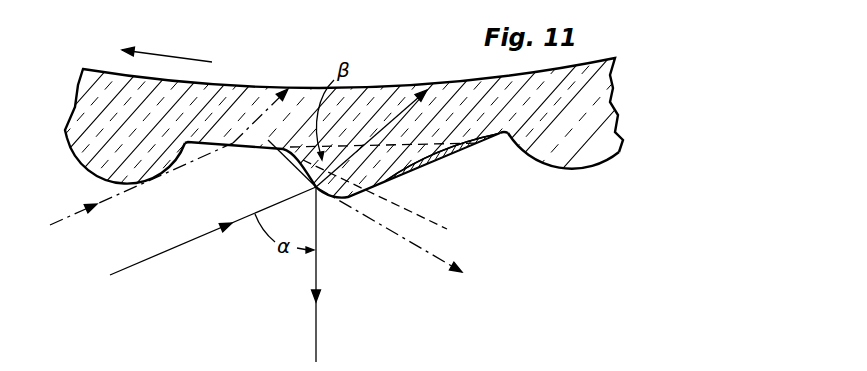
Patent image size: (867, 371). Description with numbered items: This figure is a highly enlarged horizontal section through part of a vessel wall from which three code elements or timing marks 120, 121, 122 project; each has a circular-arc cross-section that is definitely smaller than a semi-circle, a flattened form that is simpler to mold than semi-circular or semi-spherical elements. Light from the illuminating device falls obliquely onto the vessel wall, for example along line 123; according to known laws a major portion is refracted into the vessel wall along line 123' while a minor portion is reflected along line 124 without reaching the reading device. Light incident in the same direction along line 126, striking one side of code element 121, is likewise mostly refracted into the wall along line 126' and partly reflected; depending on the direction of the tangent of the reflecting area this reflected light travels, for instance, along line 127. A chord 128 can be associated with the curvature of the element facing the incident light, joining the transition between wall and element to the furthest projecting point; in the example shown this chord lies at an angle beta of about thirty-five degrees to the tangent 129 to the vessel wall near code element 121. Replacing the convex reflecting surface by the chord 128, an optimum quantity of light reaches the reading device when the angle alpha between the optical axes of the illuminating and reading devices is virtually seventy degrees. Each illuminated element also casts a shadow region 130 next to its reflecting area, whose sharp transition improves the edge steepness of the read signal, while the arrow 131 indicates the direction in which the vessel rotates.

The code element 120 is at (103, 165).
The code element 121 is at (300, 172).
The code element 122 is at (568, 170).
The line of incident light 123 is at (141, 186).
The line of refracted light 123' is at (262, 98).
The line of reflected light 124 is at (430, 254).
The line of incident light 126 is at (194, 231).
The line of refracted light 126' is at (371, 121).
The line of reflected light 127 is at (318, 332).
The chord 128 is at (441, 223).
The tangent to the vessel wall 129 is at (462, 148).
The shadow region 130 is at (418, 163).
The arrow 131 is at (187, 55).